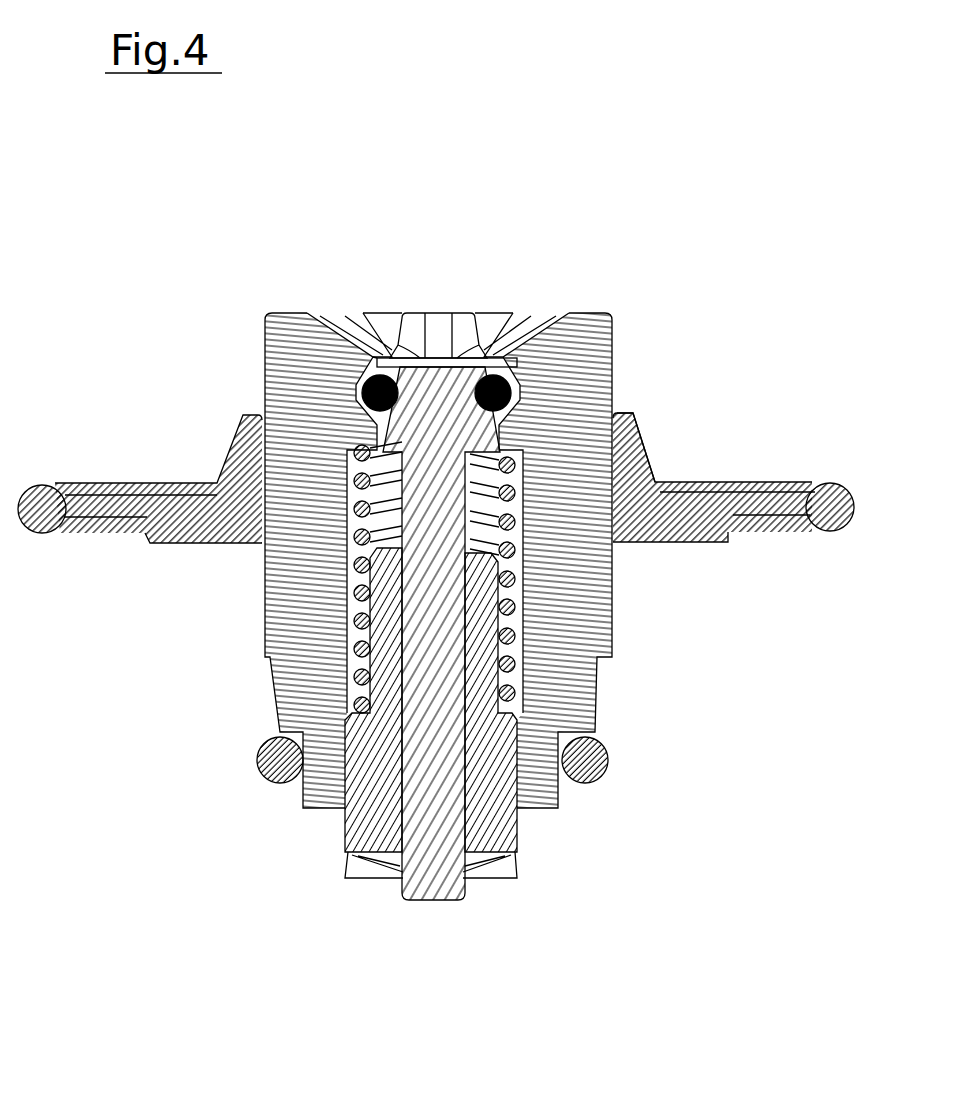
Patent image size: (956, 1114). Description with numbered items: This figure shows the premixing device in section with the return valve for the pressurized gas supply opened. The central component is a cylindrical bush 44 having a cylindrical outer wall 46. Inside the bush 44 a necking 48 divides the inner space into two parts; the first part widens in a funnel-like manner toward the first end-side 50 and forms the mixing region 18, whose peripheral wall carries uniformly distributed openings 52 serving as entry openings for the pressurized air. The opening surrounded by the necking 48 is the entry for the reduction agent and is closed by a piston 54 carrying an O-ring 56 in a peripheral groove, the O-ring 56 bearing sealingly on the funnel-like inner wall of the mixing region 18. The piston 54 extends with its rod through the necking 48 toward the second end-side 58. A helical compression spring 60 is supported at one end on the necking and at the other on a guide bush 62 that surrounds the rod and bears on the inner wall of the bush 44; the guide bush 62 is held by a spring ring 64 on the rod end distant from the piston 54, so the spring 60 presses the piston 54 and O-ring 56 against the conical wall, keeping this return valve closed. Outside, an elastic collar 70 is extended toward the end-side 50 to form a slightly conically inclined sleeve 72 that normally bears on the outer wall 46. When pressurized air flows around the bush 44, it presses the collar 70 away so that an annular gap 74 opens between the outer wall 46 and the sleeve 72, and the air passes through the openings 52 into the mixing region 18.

The mixing region 18 is at (435, 333).
The cylindrical bush 44 is at (600, 638).
The cylindrical outer wall 46 is at (613, 592).
The necking 48 is at (507, 423).
The first end-side 50 is at (542, 303).
The openings 52 is at (382, 327).
The piston 54 is at (375, 358).
The O-ring 56 is at (367, 390).
The second end-side 58 is at (547, 812).
The compression spring 60 is at (347, 599).
The guide bush 62 is at (348, 829).
The spring ring 64 is at (513, 883).
The collar 70 is at (720, 508).
The sleeve 72 is at (641, 458).
The annular gap 74 is at (630, 417).